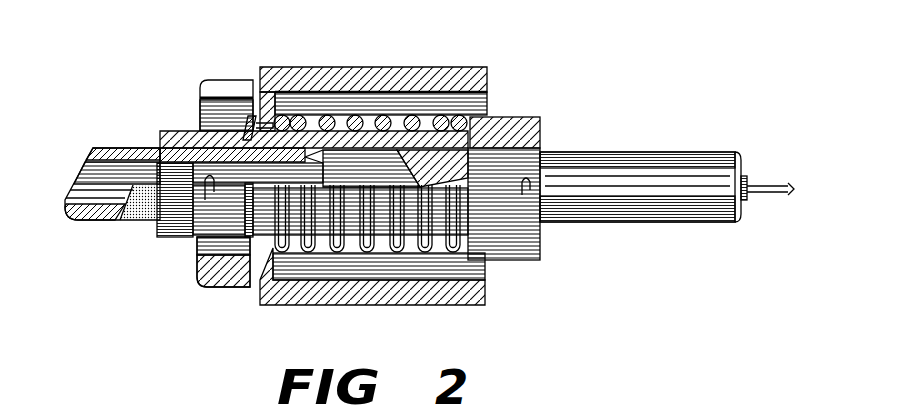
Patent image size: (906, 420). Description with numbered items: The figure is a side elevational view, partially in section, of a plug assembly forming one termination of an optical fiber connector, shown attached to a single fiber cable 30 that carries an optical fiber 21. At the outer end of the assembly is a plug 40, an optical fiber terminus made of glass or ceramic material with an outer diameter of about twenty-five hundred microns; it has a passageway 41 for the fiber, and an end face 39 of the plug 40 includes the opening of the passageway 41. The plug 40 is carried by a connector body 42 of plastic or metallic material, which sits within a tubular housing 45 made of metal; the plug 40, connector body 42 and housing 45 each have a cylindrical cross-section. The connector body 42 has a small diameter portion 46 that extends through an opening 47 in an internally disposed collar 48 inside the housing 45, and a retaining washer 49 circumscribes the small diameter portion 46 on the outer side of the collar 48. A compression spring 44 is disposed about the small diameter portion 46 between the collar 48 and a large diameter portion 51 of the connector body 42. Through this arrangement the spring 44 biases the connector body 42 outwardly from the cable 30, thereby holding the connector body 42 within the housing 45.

The optical fiber 21 is at (768, 193).
The single fiber cable 30 is at (132, 147).
The end face 39 is at (744, 178).
The plug 40 is at (641, 152).
The passageway 41 is at (546, 187).
The connector body 42 is at (305, 140).
The compression spring 44 is at (356, 117).
The tubular housing 45 is at (400, 67).
The small diameter portion 46 is at (235, 139).
The opening 47 is at (253, 117).
The collar 48 is at (257, 254).
The retaining washer 49 is at (200, 256).
The large diameter portion 51 is at (506, 120).